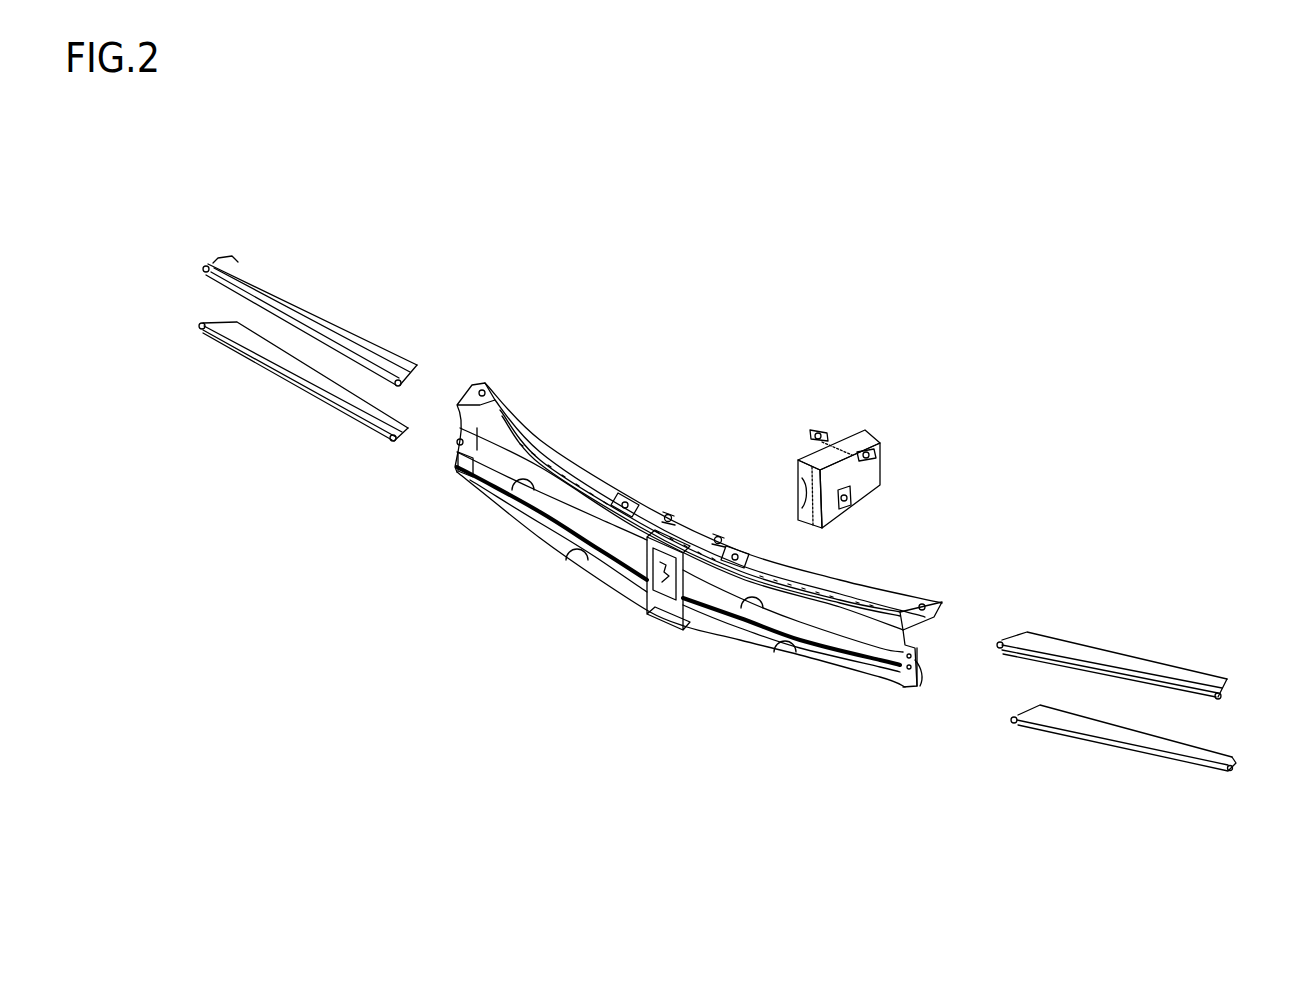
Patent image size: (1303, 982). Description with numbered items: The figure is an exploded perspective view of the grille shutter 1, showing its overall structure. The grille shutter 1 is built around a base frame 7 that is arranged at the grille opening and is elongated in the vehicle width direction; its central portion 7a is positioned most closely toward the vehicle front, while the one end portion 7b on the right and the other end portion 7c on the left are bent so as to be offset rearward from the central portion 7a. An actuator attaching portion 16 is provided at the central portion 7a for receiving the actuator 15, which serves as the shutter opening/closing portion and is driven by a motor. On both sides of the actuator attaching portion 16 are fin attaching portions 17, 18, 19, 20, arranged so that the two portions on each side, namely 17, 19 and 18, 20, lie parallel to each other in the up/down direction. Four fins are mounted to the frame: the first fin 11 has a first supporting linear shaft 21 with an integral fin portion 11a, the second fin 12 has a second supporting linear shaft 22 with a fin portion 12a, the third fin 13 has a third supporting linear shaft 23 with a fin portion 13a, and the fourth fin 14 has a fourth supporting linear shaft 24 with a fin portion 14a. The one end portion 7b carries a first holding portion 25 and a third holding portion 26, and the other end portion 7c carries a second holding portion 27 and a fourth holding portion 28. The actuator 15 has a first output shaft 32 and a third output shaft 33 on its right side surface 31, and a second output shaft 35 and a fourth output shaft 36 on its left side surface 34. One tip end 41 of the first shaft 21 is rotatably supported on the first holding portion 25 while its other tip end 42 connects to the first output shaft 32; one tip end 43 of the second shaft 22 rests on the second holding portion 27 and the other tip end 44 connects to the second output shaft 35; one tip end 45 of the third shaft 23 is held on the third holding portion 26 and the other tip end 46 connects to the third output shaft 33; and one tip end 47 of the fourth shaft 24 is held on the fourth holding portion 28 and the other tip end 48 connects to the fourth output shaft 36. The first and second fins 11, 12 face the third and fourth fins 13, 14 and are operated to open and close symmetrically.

The grille shutter 1 is at (656, 315).
The base frame 7 is at (502, 418).
The central portion 7a is at (661, 510).
The one end portion 7b is at (930, 658).
The other end portion 7c is at (476, 378).
The first fin 11 is at (1132, 627).
The fin portion 11a is at (1083, 647).
The second fin 12 is at (322, 290).
The fin portion 12a is at (287, 305).
The third fin 13 is at (1104, 789).
The fin portion 13a is at (1068, 722).
The fourth fin 14 is at (287, 403).
The fin portion 14a is at (270, 355).
The actuator 15 is at (843, 433).
The actuator attaching portion 16 is at (655, 603).
The fin attaching portion 17 is at (744, 605).
The fin attaching portion 18 is at (523, 482).
The fin attaching portion 19 is at (778, 645).
The fin attaching portion 20 is at (572, 548).
The first supporting linear shaft 21 is at (1157, 683).
The second supporting linear shaft 22 is at (242, 280).
The third supporting linear shaft 23 is at (1137, 748).
The fourth supporting linear shaft 24 is at (305, 388).
The first holding portion 25 is at (915, 647).
The third holding portion 26 is at (917, 697).
The second holding portion 27 is at (459, 438).
The fourth holding portion 28 is at (458, 454).
The right side surface 31 is at (858, 458).
The first output shaft 32 is at (868, 462).
The third output shaft 33 is at (842, 508).
The left side surface 34 is at (797, 458).
The second output shaft 35 is at (798, 470).
The fourth output shaft 36 is at (798, 498).
The one tip end 41 is at (1223, 693).
The other tip end 42 is at (1001, 640).
The one tip end 43 is at (207, 266).
The other tip end 44 is at (400, 380).
The one tip end 45 is at (1230, 771).
The other tip end 46 is at (1012, 722).
The one tip end 47 is at (200, 330).
The other tip end 48 is at (392, 439).